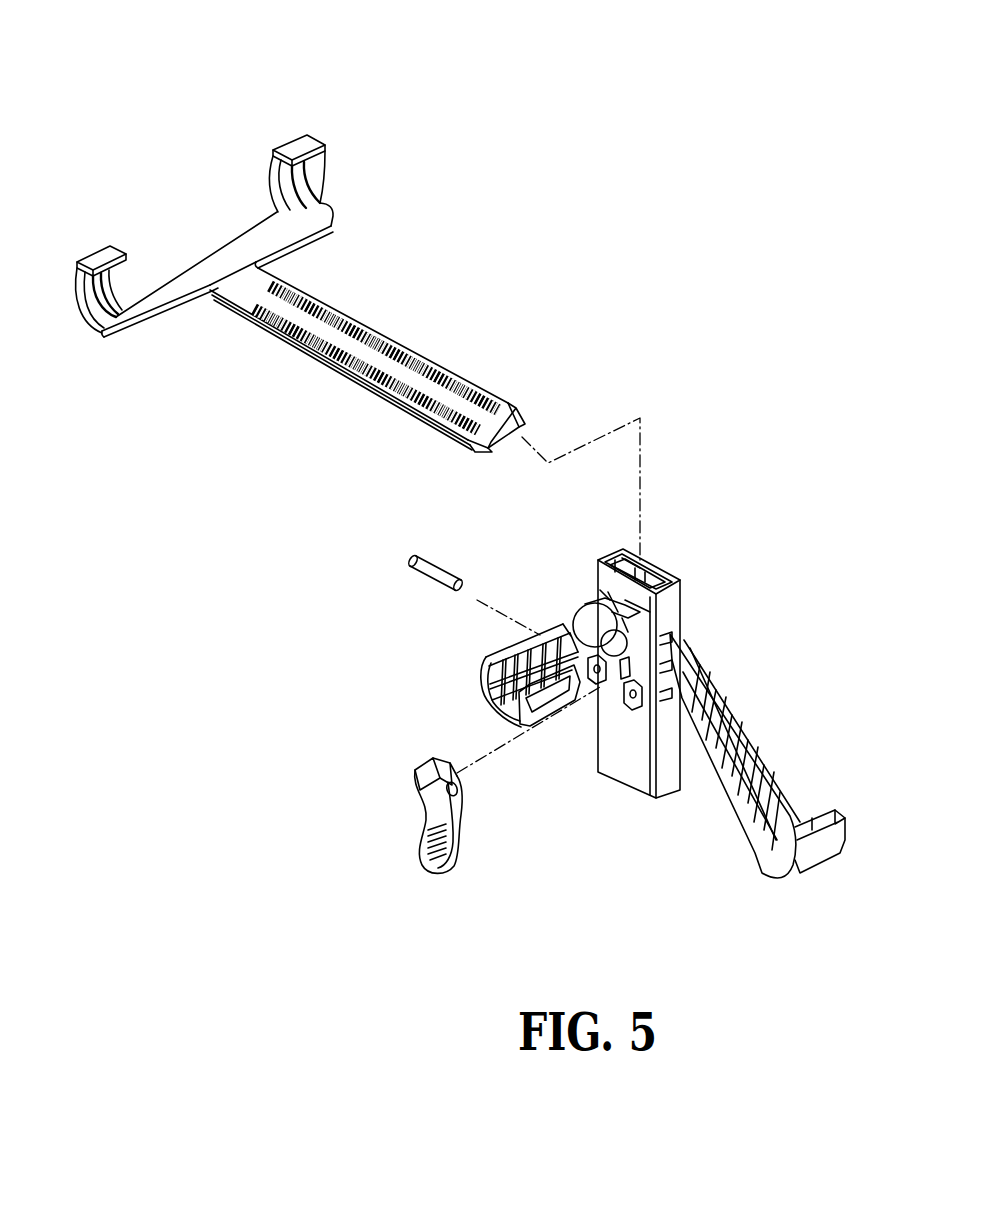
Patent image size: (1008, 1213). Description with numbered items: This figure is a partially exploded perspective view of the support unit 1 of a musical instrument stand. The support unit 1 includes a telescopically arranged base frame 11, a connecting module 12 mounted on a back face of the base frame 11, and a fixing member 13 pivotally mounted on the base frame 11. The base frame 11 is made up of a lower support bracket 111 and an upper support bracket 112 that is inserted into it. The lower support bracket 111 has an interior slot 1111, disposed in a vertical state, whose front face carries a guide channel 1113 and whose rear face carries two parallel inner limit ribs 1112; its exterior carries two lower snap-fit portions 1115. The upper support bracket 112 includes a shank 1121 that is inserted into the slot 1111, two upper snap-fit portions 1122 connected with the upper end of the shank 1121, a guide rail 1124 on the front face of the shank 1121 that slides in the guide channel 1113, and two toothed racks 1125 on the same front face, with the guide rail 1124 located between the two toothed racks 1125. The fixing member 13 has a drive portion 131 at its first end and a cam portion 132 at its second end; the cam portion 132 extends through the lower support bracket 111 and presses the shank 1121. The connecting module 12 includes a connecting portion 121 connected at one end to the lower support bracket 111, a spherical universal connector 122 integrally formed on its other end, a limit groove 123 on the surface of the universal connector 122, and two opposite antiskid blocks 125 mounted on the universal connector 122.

The support unit 1 is at (347, 795).
The base frame 11 is at (603, 807).
The lower support bracket 111 is at (640, 773).
The slot 1111 is at (670, 570).
The inner limit ribs 1112 is at (626, 552).
The guide channel 1113 is at (643, 558).
The lower snap-fit portions 1115 is at (490, 700).
The upper support bracket 112 is at (209, 293).
The shank 1121 is at (267, 268).
The upper snap-fit portions 1122 is at (292, 150).
The guide rail 1124 is at (340, 333).
The toothed racks 1125 is at (387, 343).
The connecting module 12 is at (558, 617).
The connecting portion 121 is at (613, 603).
The spherical universal connector 122 is at (575, 623).
The limit groove 123 is at (607, 607).
The antiskid blocks 125 is at (613, 640).
The fixing member 13 is at (407, 850).
The drive portion 131 is at (427, 847).
The cam portion 132 is at (452, 767).